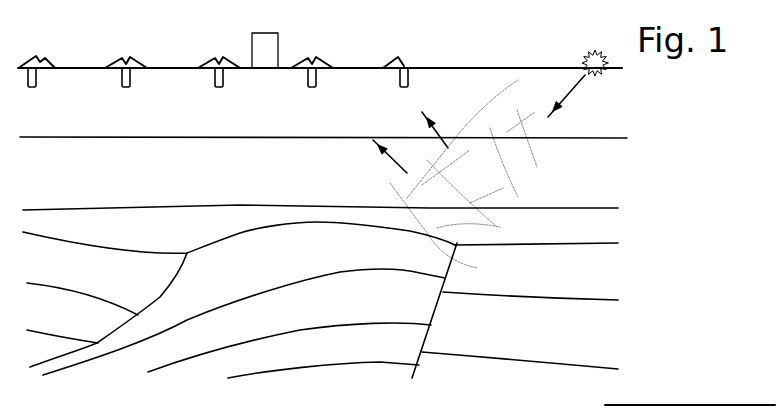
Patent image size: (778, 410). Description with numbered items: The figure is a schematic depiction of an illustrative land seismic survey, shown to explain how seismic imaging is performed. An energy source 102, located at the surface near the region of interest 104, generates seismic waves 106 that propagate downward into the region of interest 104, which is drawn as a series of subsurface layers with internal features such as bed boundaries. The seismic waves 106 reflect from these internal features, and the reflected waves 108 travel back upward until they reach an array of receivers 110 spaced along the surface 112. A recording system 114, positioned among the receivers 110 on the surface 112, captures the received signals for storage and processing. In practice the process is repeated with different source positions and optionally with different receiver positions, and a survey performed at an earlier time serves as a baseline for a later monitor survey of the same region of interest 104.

The energy source 102 is at (585, 60).
The region of interest 104 is at (637, 107).
The seismic waves 106 is at (572, 99).
The reflected waves 108 is at (448, 174).
The receivers 110 is at (121, 78).
The surface 112 is at (472, 66).
The recording system 114 is at (252, 56).